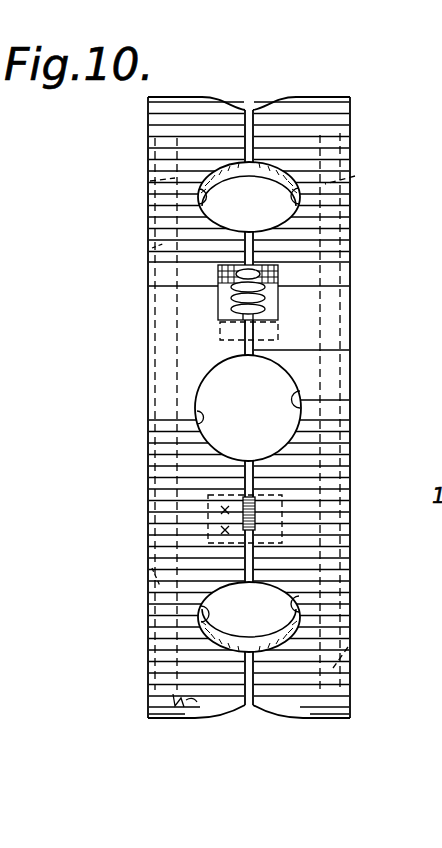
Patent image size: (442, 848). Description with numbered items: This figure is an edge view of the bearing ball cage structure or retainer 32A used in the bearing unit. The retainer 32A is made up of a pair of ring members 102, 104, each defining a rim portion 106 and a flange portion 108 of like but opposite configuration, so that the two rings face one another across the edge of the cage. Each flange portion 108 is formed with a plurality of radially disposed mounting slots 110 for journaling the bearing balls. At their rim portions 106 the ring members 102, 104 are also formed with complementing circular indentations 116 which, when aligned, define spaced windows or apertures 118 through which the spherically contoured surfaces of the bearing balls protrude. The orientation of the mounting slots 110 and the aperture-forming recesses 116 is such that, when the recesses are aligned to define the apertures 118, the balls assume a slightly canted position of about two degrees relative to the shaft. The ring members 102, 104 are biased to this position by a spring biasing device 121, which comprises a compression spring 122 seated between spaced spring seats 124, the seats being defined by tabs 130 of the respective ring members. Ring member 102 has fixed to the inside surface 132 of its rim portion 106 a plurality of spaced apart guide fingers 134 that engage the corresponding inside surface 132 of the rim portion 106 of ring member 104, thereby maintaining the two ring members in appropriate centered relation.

The cage structure or retainer 32A is at (275, 80).
The ring member 102 is at (180, 390).
The ring member 104 is at (347, 424).
The rim portion 106 is at (148, 531).
The flange portion 108 is at (152, 248).
The mounting slots 110 is at (150, 181).
The circular indentations 116 is at (199, 197).
The windows or apertures 118 is at (216, 432).
The spring biasing device 121 is at (289, 311).
The compression spring 122 is at (218, 300).
The spring seats 124 is at (278, 268).
The tabs 130 is at (220, 339).
The inside surface 132 is at (171, 722).
The guide fingers 134 is at (253, 528).